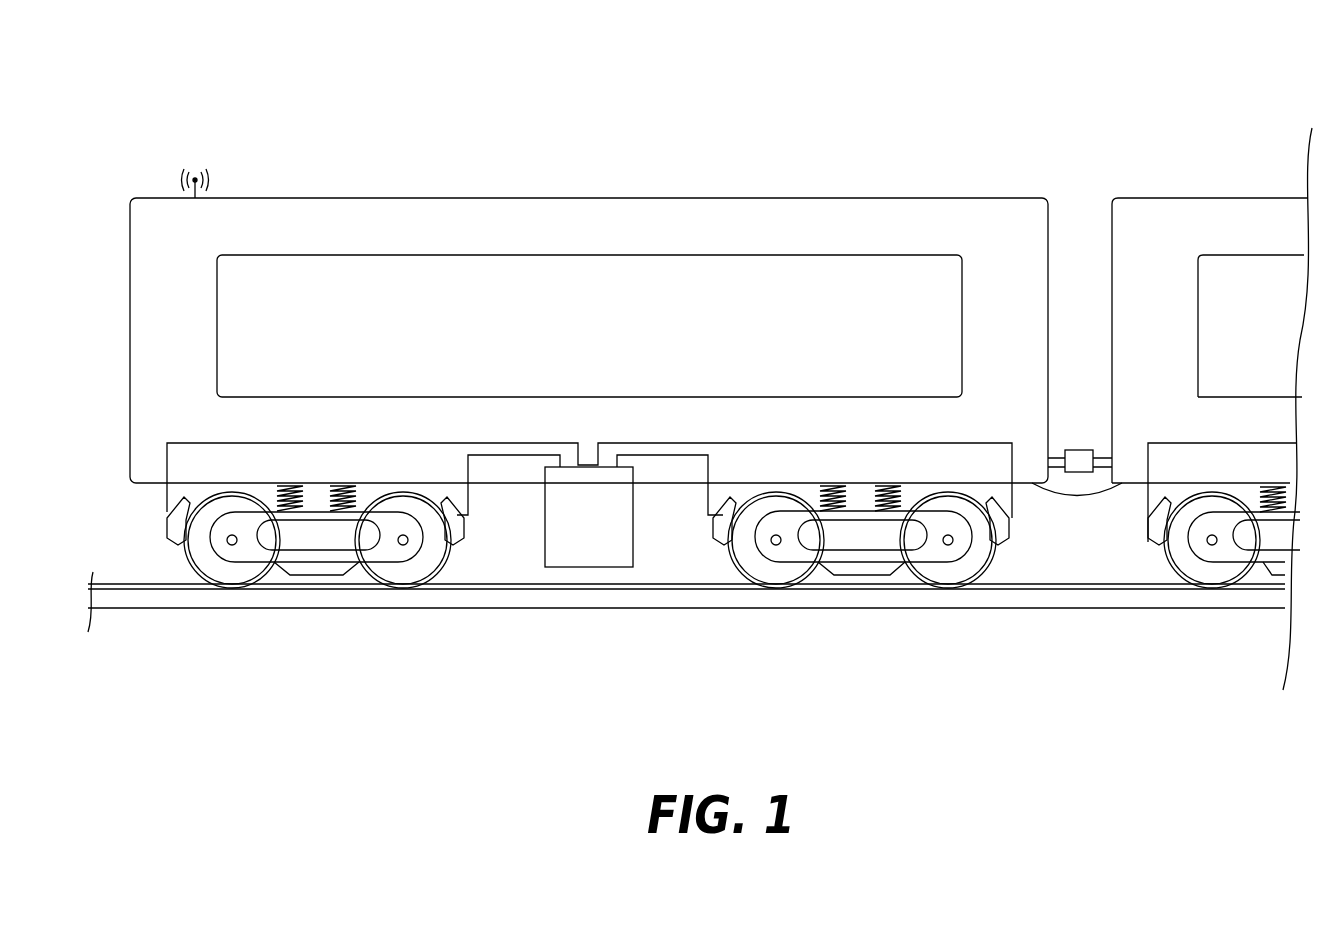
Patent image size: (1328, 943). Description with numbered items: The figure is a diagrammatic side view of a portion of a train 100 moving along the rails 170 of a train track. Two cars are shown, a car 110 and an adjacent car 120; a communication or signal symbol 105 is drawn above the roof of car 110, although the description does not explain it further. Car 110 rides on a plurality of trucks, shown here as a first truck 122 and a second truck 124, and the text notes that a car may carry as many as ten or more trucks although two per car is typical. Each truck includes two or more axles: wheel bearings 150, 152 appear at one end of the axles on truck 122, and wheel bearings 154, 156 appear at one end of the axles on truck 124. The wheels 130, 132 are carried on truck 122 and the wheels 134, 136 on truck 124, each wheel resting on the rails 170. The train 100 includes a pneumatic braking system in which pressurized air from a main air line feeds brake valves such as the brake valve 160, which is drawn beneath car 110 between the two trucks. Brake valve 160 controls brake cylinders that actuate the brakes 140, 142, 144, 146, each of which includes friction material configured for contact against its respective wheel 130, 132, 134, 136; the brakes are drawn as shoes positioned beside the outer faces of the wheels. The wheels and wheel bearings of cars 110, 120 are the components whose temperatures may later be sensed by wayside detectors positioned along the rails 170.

The train 100 is at (748, 58).
The communication device / antenna 105 is at (195, 162).
The car 110 is at (970, 198).
The car 120 is at (1150, 198).
The truck 122 is at (308, 566).
The truck 124 is at (870, 563).
The wheel 130 is at (217, 572).
The wheel 132 is at (410, 571).
The wheel 134 is at (763, 571).
The wheel 136 is at (963, 573).
The brake 140 is at (170, 527).
The brake 142 is at (470, 517).
The brake 144 is at (720, 542).
The brake 146 is at (1005, 542).
The wheel bearing 150 is at (236, 548).
The wheel bearing 152 is at (408, 548).
The wheel bearing 154 is at (772, 548).
The wheel bearing 156 is at (944, 548).
The brake valve 160 is at (583, 558).
The rails 170 is at (1075, 583).